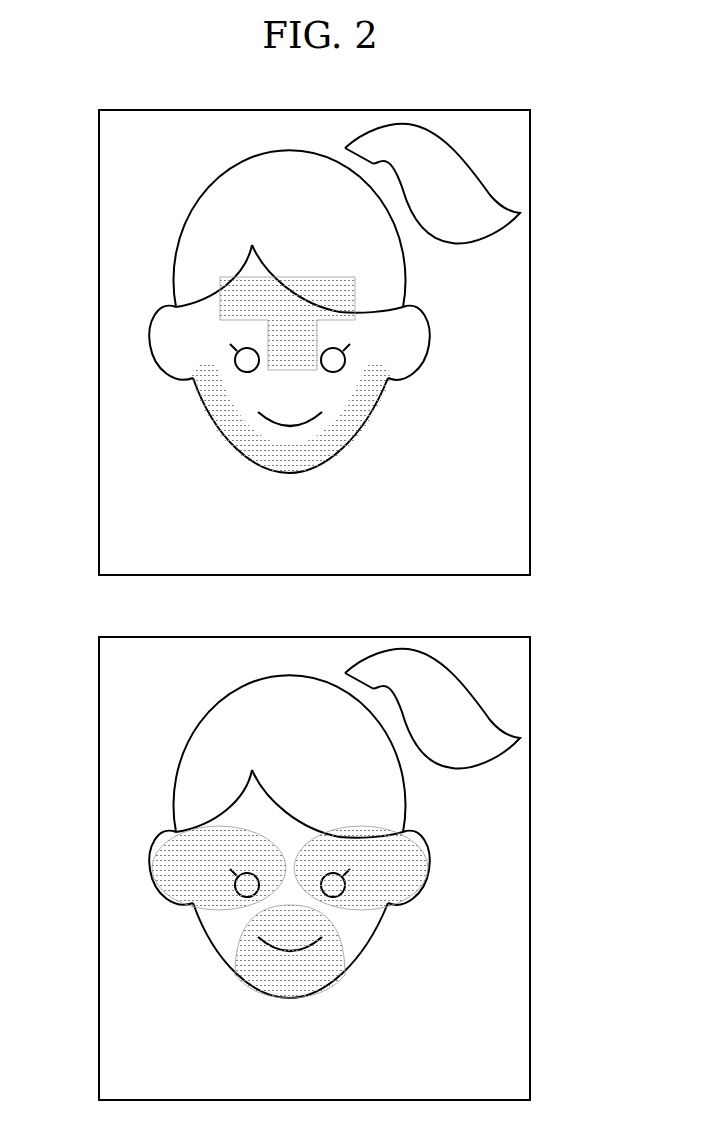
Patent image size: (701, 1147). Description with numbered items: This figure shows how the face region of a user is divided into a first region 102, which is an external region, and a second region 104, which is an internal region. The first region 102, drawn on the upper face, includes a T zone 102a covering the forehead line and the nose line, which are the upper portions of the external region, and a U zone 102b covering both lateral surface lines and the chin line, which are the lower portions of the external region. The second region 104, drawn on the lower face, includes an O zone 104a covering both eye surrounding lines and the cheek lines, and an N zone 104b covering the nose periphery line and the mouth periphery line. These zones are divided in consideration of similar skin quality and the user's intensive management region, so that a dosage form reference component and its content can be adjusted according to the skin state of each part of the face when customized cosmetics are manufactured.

The first region 102 is at (99, 340).
The T zone 102a is at (347, 293).
The U zone 102b is at (367, 405).
The second region 104 is at (99, 865).
The O zone 104a is at (400, 877).
The N zone 104b is at (332, 960).